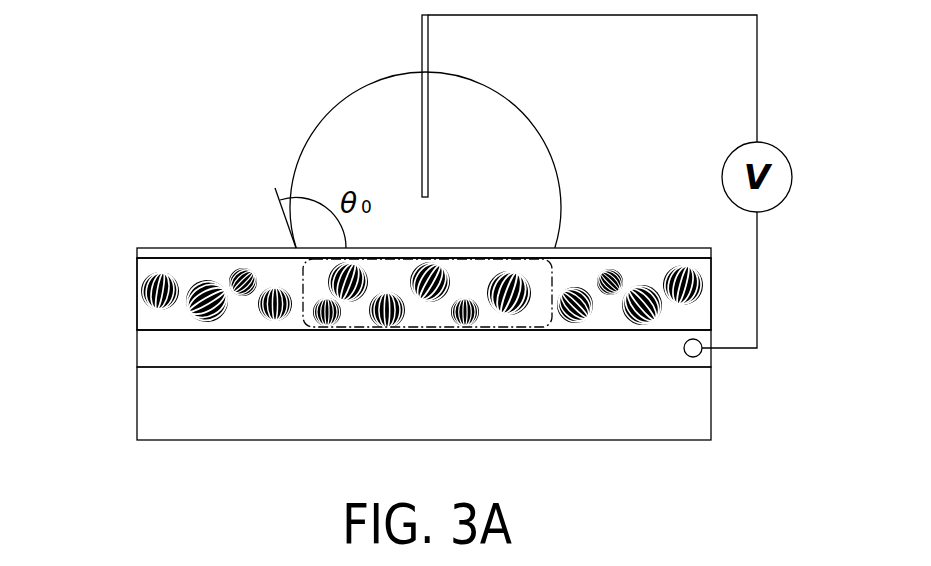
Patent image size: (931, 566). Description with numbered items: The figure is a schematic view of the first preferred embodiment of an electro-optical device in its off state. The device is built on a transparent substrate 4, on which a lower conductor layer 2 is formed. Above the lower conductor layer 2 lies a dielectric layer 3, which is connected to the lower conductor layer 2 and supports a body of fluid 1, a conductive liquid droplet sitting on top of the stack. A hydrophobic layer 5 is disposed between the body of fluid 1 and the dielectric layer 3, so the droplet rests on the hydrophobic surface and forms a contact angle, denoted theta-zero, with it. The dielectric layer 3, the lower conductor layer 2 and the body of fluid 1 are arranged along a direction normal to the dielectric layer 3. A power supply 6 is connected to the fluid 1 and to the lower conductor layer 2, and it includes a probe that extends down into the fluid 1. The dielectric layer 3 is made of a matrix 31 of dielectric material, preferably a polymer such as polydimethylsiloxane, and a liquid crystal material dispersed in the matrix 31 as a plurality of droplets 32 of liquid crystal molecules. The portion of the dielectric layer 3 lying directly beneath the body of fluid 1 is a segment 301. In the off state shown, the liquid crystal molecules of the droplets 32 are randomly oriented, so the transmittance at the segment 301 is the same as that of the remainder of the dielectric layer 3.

The body of fluid 1 is at (520, 158).
The lower conductor layer 2 is at (160, 350).
The dielectric layer 3 is at (155, 320).
The transparent substrate 4 is at (160, 417).
The hydrophobic layer 5 is at (153, 254).
The power supply 6 is at (422, 42).
The matrix 31 is at (660, 263).
The droplets 32 is at (141, 282).
The segment 301 is at (540, 313).